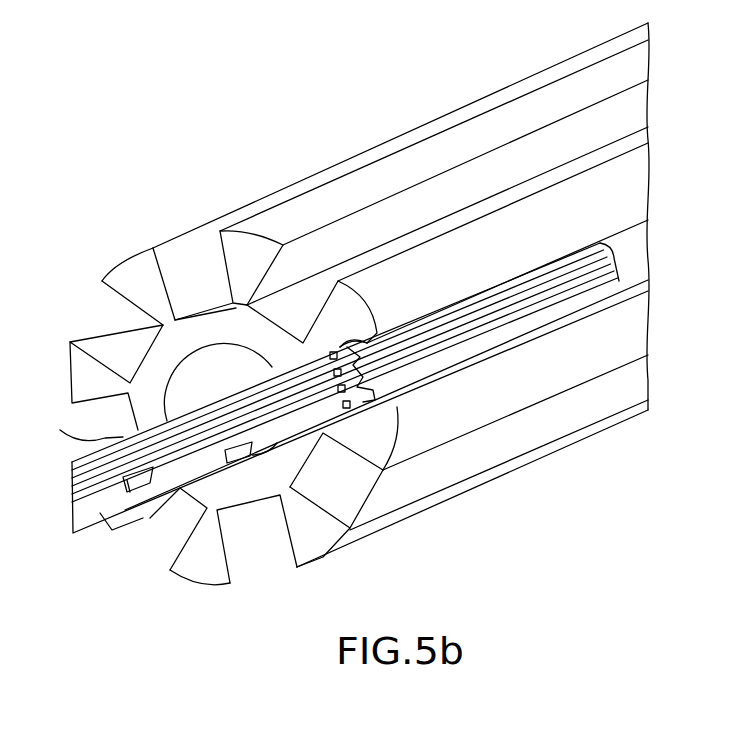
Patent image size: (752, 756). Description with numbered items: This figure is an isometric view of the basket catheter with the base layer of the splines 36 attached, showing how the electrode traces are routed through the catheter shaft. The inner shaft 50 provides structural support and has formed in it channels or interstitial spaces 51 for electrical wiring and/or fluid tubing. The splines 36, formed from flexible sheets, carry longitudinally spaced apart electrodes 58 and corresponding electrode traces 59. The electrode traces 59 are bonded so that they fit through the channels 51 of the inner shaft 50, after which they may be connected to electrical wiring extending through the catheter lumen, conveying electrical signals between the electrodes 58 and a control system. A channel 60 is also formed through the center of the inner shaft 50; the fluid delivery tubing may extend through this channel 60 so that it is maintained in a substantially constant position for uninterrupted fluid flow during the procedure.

The inner shaft 50 is at (238, 133).
The channels 51 is at (500, 175).
The channel 60 is at (210, 382).
The splines 36 is at (85, 534).
The electrode traces 59 is at (178, 472).
The electrodes 58 is at (140, 494).